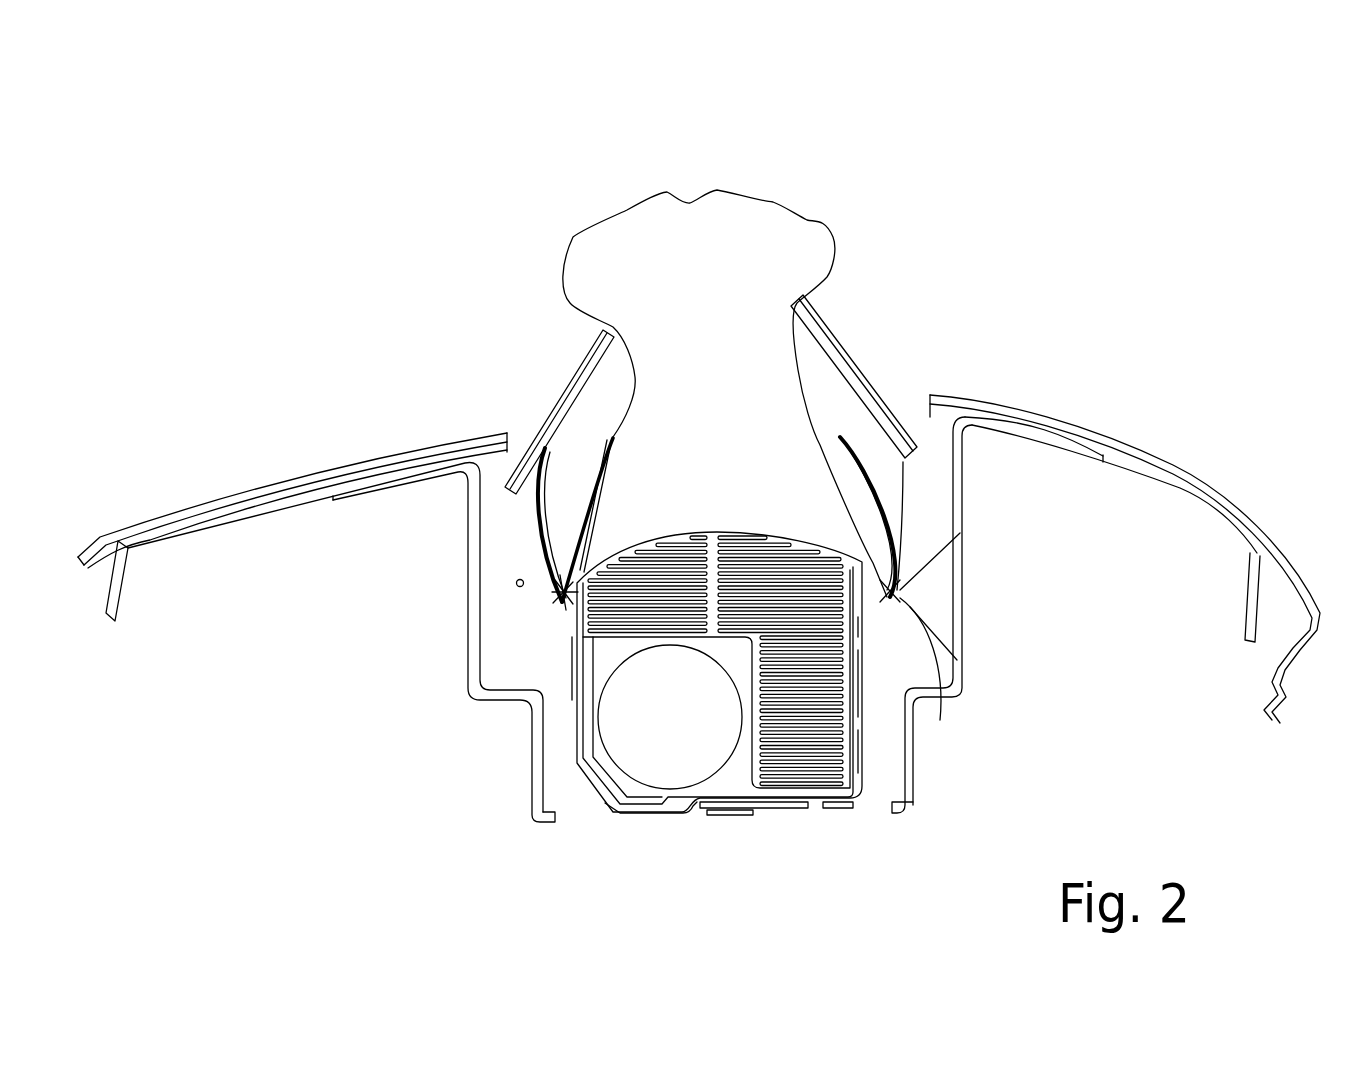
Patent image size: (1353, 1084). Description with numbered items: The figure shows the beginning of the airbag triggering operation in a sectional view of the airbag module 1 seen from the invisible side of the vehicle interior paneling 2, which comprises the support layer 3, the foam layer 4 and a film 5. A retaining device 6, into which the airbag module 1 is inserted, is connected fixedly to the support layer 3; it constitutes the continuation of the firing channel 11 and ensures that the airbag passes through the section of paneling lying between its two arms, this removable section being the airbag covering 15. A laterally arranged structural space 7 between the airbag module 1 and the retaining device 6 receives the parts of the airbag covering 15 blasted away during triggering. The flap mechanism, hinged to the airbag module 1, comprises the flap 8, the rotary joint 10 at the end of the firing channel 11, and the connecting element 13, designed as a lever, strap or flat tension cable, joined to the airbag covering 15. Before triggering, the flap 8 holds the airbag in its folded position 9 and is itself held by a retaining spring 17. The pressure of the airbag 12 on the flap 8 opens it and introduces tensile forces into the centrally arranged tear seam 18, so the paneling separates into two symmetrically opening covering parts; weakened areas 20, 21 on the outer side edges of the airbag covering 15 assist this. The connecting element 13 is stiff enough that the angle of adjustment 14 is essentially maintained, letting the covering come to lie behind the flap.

The airbag module 1 is at (790, 810).
The vehicle interior paneling 2 is at (1158, 476).
The support layer 3 is at (1200, 497).
The foam layer 4 is at (1097, 420).
The film 5 is at (1175, 466).
The retaining device 6 is at (468, 632).
The structural space 7 is at (512, 582).
The flap 8 is at (587, 440).
The folded position 9 is at (725, 536).
The rotary joint 10 is at (557, 600).
The firing channel 11 is at (577, 658).
The airbag 12 is at (682, 200).
The connecting element 13 is at (918, 580).
The angle of adjustment 14 is at (951, 698).
The airbag covering 15 is at (578, 372).
The retaining spring 17 is at (550, 588).
The tear seam 18 is at (808, 296).
The weakened area 20 is at (930, 395).
The weakened area 21 is at (580, 572).